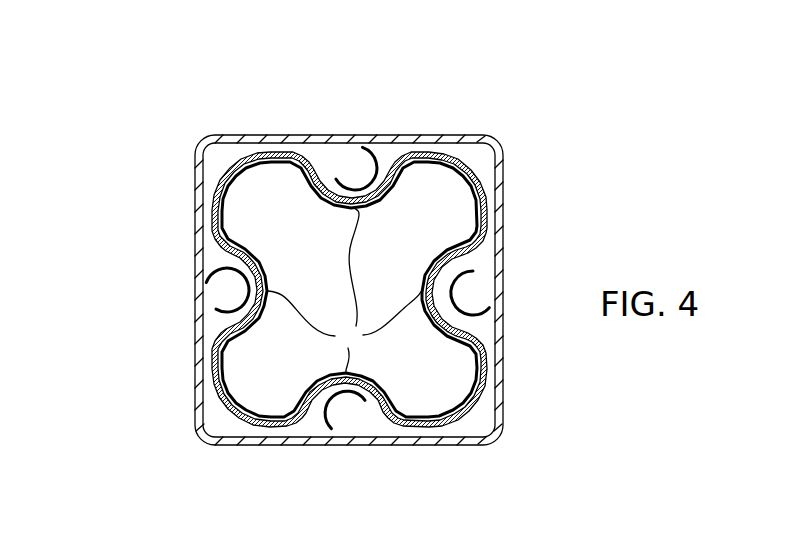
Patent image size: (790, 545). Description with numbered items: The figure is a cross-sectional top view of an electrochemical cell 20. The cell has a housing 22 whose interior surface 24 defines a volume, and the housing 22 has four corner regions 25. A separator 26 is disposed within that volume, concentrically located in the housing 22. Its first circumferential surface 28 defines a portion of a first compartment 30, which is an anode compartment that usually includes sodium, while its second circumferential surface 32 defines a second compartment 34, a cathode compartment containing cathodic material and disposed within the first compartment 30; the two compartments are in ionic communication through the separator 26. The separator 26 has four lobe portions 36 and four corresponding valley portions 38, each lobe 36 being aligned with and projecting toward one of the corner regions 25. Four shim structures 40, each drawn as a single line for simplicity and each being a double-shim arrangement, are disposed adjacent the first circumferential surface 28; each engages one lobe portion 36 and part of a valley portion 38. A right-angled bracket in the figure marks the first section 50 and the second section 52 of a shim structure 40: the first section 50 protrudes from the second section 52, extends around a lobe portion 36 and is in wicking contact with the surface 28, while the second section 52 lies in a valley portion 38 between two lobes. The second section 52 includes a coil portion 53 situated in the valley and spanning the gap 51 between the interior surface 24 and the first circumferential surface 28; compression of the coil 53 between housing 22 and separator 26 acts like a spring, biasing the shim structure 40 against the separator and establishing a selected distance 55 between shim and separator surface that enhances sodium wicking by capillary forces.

The electrochemical cell 20 is at (146, 51).
The housing 22 is at (202, 438).
The interior surface 24 is at (210, 406).
The corner regions 25 is at (204, 147).
The separator 26 is at (442, 420).
The first circumferential surface 28 is at (484, 350).
The first compartment 30 is at (238, 304).
The second circumferential surface 32 is at (478, 372).
The second compartment 34 is at (286, 226).
The lobe portions 36 is at (452, 154).
The valley portions 38 is at (345, 290).
The shim structures 40 is at (390, 190).
The first section 50 is at (377, 135).
The gap 51 is at (350, 174).
The second section 52 is at (350, 128).
The coil portion 53 is at (378, 143).
The selected distance (gap) 55 is at (233, 162).